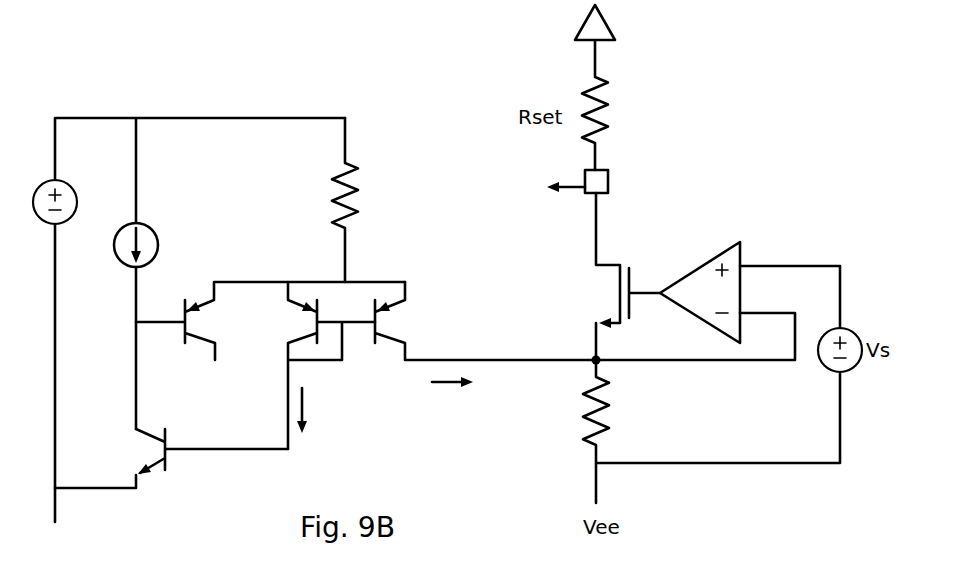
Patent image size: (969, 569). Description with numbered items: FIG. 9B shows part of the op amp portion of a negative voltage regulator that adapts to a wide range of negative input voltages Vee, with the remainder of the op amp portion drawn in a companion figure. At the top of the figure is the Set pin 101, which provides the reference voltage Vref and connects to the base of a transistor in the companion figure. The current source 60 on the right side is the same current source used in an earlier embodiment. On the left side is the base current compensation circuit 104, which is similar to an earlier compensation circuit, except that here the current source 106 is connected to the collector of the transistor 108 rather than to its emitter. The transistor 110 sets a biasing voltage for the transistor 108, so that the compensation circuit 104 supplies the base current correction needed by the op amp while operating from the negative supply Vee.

The base current compensation circuit 104 is at (294, 78).
The current source 106 is at (156, 231).
The transistor 110 is at (190, 283).
The transistor 108 is at (148, 486).
The Set pin 101 is at (608, 171).
The current source 60 is at (752, 218).